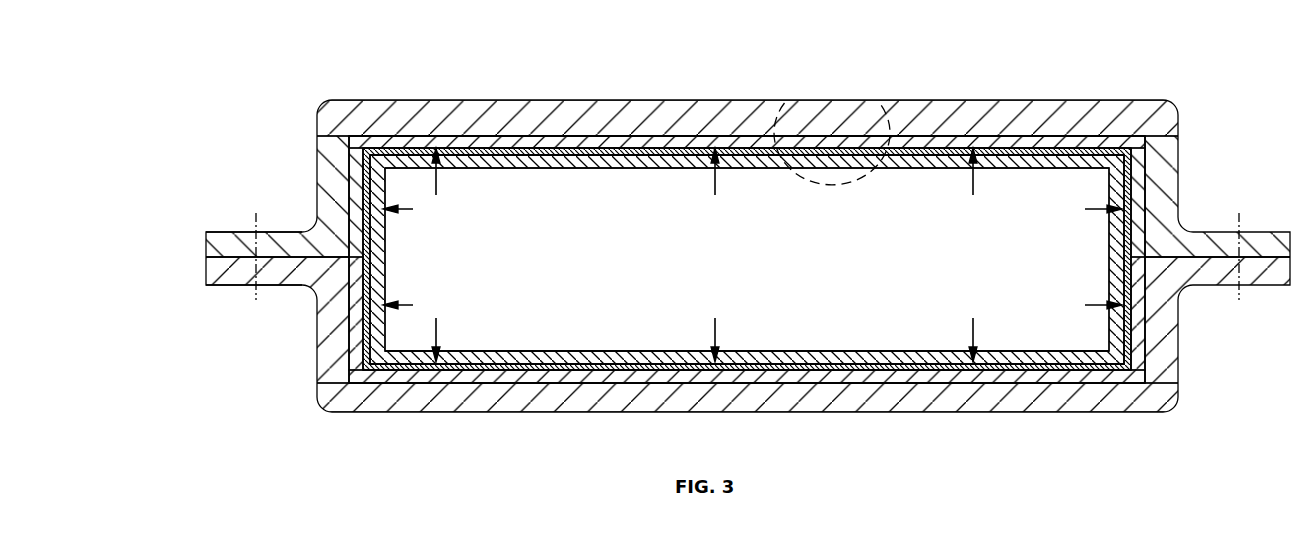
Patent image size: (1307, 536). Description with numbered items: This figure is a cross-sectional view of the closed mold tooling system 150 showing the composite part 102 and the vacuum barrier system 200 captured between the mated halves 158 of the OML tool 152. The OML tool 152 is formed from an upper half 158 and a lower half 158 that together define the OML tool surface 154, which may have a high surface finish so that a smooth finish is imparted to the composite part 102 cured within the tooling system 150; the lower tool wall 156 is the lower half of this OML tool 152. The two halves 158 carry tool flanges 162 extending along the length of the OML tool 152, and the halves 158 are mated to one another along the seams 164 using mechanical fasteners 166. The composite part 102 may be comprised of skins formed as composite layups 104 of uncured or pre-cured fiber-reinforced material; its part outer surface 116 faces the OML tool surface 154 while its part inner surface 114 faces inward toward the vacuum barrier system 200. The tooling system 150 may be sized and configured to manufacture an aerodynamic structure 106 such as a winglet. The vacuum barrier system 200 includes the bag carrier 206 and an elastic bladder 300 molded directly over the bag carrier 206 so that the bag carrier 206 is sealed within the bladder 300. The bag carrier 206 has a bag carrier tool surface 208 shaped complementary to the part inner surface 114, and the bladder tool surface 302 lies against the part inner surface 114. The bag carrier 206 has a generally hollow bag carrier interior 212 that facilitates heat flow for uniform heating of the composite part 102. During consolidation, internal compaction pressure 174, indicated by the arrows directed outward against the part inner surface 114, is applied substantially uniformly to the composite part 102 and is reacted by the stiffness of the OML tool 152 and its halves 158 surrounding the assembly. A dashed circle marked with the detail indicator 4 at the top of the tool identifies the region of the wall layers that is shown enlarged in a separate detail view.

The closed mold tooling system 150 is at (345, 79).
The OML tool 152 is at (322, 101).
The OML tool surface 154 is at (415, 140).
The bottom wall 156 is at (389, 391).
The OML tool halves 158 is at (317, 175).
The tool flanges 162 is at (222, 232).
The seams 164 is at (206, 257).
The mechanical fasteners 166 is at (254, 296).
The part outer surface 116 is at (560, 135).
The part inner surface 114 is at (600, 150).
The composite part 102 is at (517, 140).
The composite layups 104 is at (508, 370).
The aerodynamic structure 106 is at (482, 382).
The vacuum barrier system 200 is at (570, 360).
The bag carrier 206 is at (637, 351).
The bag carrier tool surface 208 is at (643, 368).
The bag carrier interior 212 is at (666, 253).
The elastic bladder 300 is at (820, 366).
The bladder tool surface 302 is at (866, 372).
The internal compaction pressure 174 is at (433, 193).
The detail view circle 4 is at (784, 103).